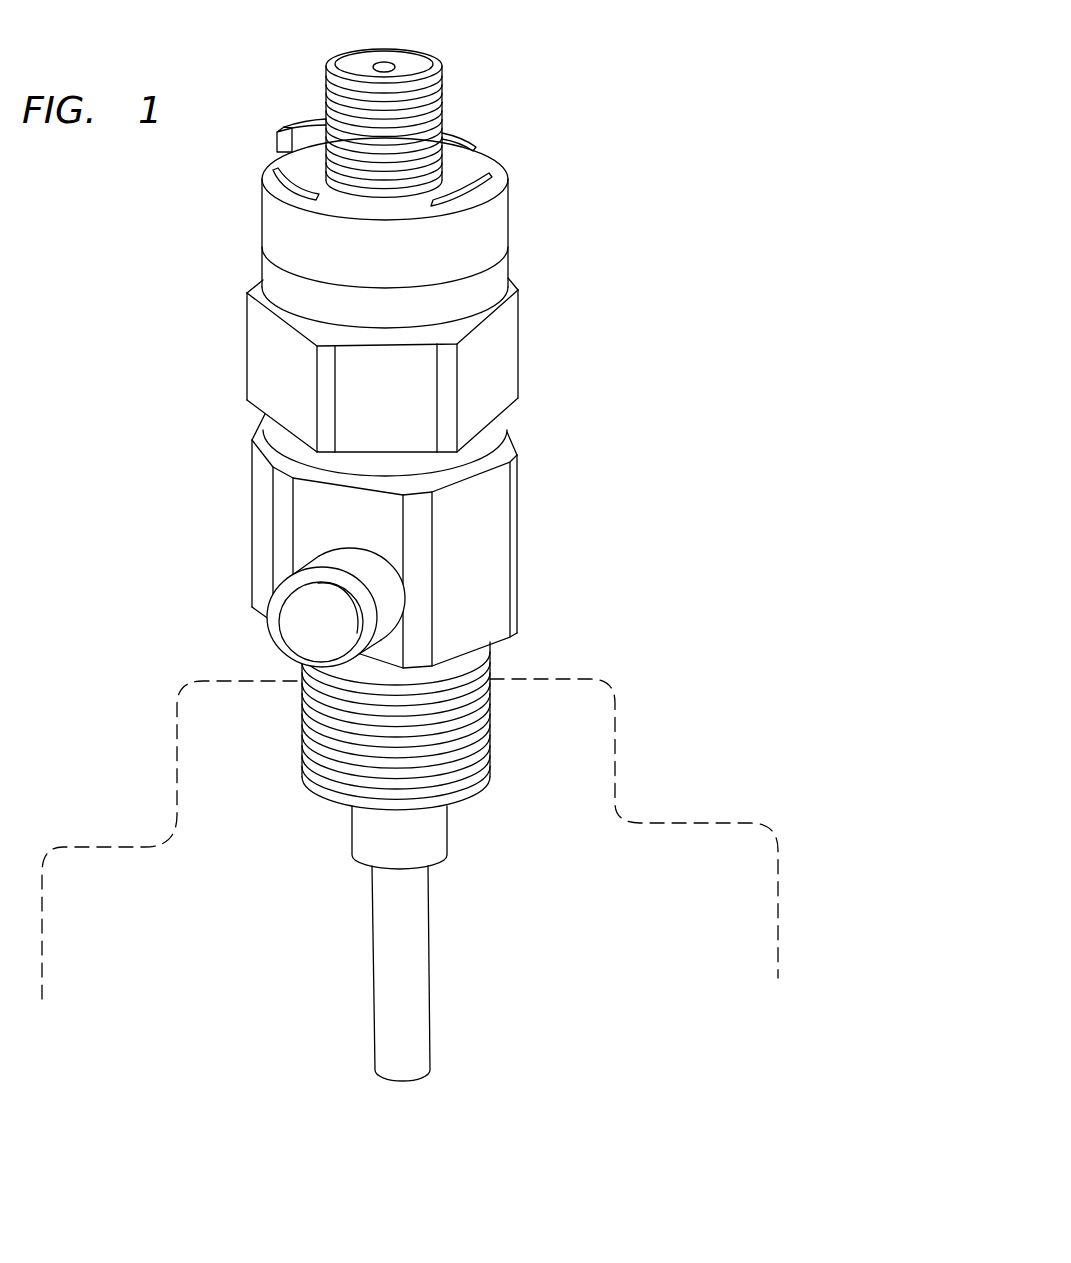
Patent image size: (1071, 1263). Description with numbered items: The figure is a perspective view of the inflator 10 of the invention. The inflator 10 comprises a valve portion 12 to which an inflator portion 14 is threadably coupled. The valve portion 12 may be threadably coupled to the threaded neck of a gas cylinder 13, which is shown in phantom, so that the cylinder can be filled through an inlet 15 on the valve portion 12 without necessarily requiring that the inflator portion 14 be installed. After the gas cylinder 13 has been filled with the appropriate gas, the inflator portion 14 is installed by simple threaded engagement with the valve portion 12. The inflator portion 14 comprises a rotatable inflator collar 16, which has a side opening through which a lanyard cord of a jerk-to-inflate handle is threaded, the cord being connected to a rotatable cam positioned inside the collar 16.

The inflator 10 is at (447, 540).
The valve portion 12 is at (517, 588).
The gas cylinder 13 is at (177, 775).
The inflator portion 14 is at (518, 368).
The inlet 15 is at (280, 650).
The rotatable inflator collar 16 is at (510, 215).